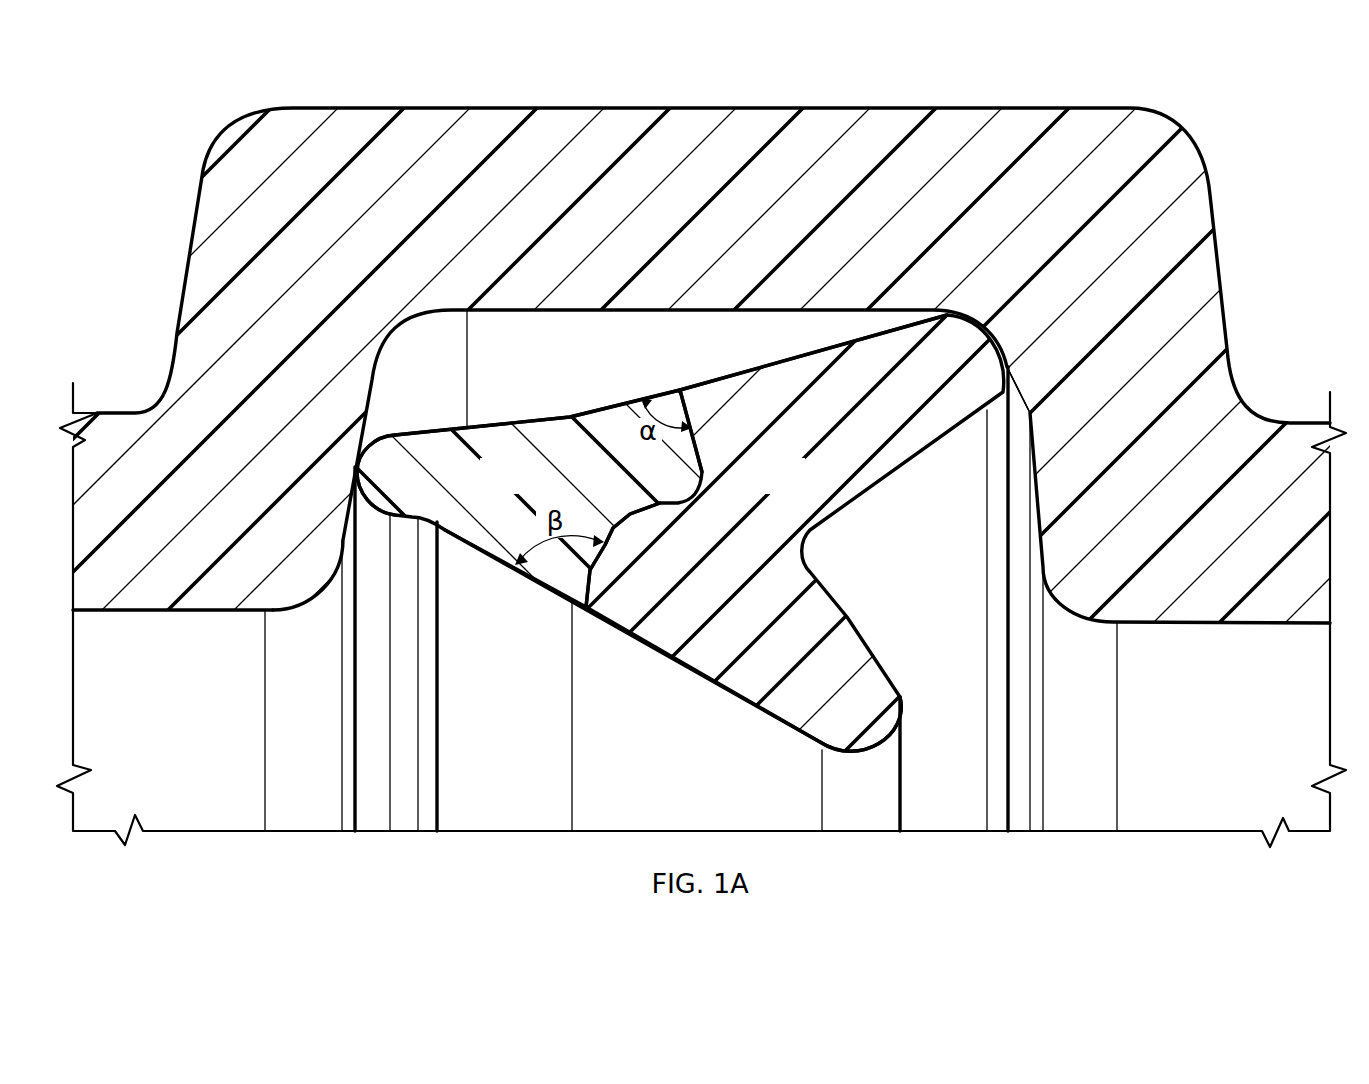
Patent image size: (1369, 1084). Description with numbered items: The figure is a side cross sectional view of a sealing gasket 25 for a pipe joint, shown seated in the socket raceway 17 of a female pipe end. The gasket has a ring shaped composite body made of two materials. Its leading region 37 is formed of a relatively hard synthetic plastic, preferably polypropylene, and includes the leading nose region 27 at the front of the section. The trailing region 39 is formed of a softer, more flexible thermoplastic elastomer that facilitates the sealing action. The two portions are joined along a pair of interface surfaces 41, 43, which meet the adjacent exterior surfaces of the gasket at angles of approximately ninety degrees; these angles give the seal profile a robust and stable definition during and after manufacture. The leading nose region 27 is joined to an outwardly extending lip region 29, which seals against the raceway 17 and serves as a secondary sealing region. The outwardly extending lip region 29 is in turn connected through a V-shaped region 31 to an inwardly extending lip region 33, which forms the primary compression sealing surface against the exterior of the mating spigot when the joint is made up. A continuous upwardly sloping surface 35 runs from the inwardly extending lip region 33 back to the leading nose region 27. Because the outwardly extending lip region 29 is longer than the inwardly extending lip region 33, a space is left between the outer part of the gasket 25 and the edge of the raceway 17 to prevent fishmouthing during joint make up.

The socket raceway 17 is at (549, 326).
The sealing gasket 25 is at (596, 395).
The leading nose region 27 is at (347, 472).
The outwardly extending lip region 29 is at (1008, 367).
The V-shaped region 31 is at (903, 578).
The inwardly extending lip region 33 is at (877, 745).
The upwardly sloping surface 35 is at (689, 670).
The leading region 37 is at (483, 491).
The trailing region 39 is at (770, 491).
The interface surface 41 is at (689, 396).
The interface surface 43 is at (582, 586).